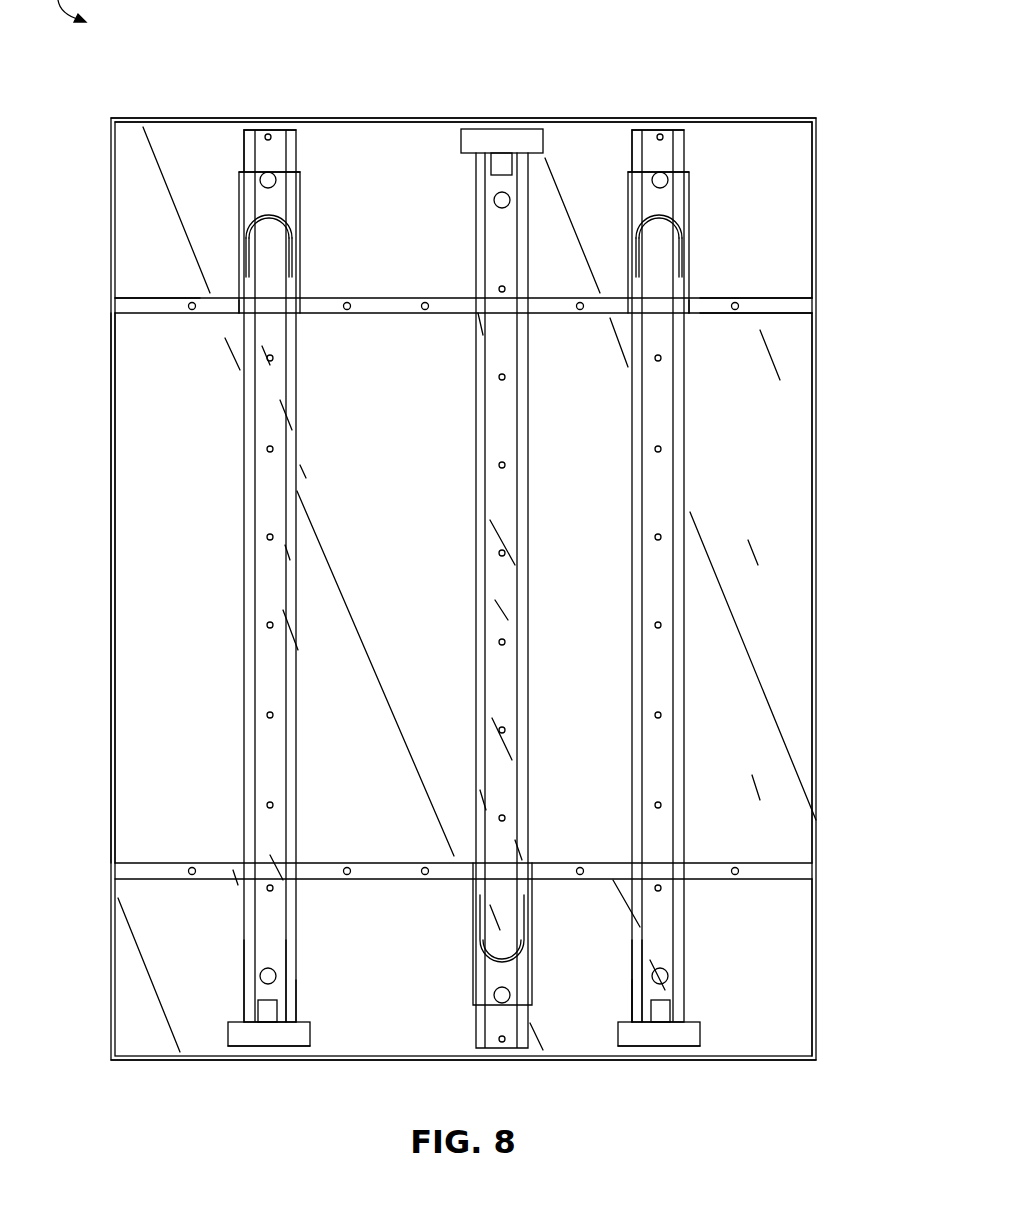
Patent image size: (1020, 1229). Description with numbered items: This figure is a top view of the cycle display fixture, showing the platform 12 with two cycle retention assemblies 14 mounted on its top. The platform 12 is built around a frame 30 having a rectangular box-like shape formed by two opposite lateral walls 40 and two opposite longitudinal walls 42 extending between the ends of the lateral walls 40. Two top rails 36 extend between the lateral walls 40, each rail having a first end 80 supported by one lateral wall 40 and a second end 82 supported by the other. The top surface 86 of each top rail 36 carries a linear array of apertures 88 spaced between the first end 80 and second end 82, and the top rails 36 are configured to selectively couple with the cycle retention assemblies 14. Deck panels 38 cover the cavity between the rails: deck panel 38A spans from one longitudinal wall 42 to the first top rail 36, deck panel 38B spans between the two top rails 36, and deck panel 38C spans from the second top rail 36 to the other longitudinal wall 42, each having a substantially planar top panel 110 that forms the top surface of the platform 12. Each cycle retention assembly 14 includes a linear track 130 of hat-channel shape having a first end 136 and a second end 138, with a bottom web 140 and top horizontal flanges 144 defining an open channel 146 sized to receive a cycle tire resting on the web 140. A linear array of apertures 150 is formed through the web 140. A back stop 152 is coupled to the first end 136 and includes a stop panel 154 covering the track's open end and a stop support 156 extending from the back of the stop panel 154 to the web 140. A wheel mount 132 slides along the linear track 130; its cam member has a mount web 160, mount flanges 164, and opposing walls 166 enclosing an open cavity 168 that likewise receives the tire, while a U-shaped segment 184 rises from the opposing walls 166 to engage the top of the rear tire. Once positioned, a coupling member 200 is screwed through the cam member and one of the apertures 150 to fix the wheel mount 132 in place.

The platform 12 is at (118, 143).
The cycle retention assembly 14 is at (198, 196).
The frame 30 is at (816, 405).
The top rail 36 is at (803, 307).
The deck panel 38 is at (797, 138).
The deck panel 38A is at (797, 192).
The deck panel 38B is at (790, 622).
The deck panel 38C is at (797, 1030).
The lateral wall 40 is at (758, 118).
The longitudinal wall 42 is at (108, 757).
The first end 80 is at (122, 308).
The second end 82 is at (798, 295).
The top surface 86 is at (775, 310).
The aperture 88 is at (192, 312).
The top panel 110 is at (797, 237).
The linear track 130 is at (253, 450).
The wheel mount 132 is at (262, 230).
The first end 136 is at (296, 1003).
The second end 138 is at (243, 142).
The web 140 is at (270, 952).
The flange 144 is at (250, 970).
The open channel 146 is at (262, 478).
The aperture 150 is at (268, 132).
The back stop 152 is at (293, 1040).
The stop panel 154 is at (243, 1047).
The stop support 156 is at (265, 1018).
The mount web 160 is at (263, 290).
The mount flange 164 is at (253, 257).
The opposing wall 166 is at (292, 165).
The open cavity 168 is at (300, 190).
The U-shaped segment 184 is at (253, 237).
The coupling member 200 is at (270, 195).